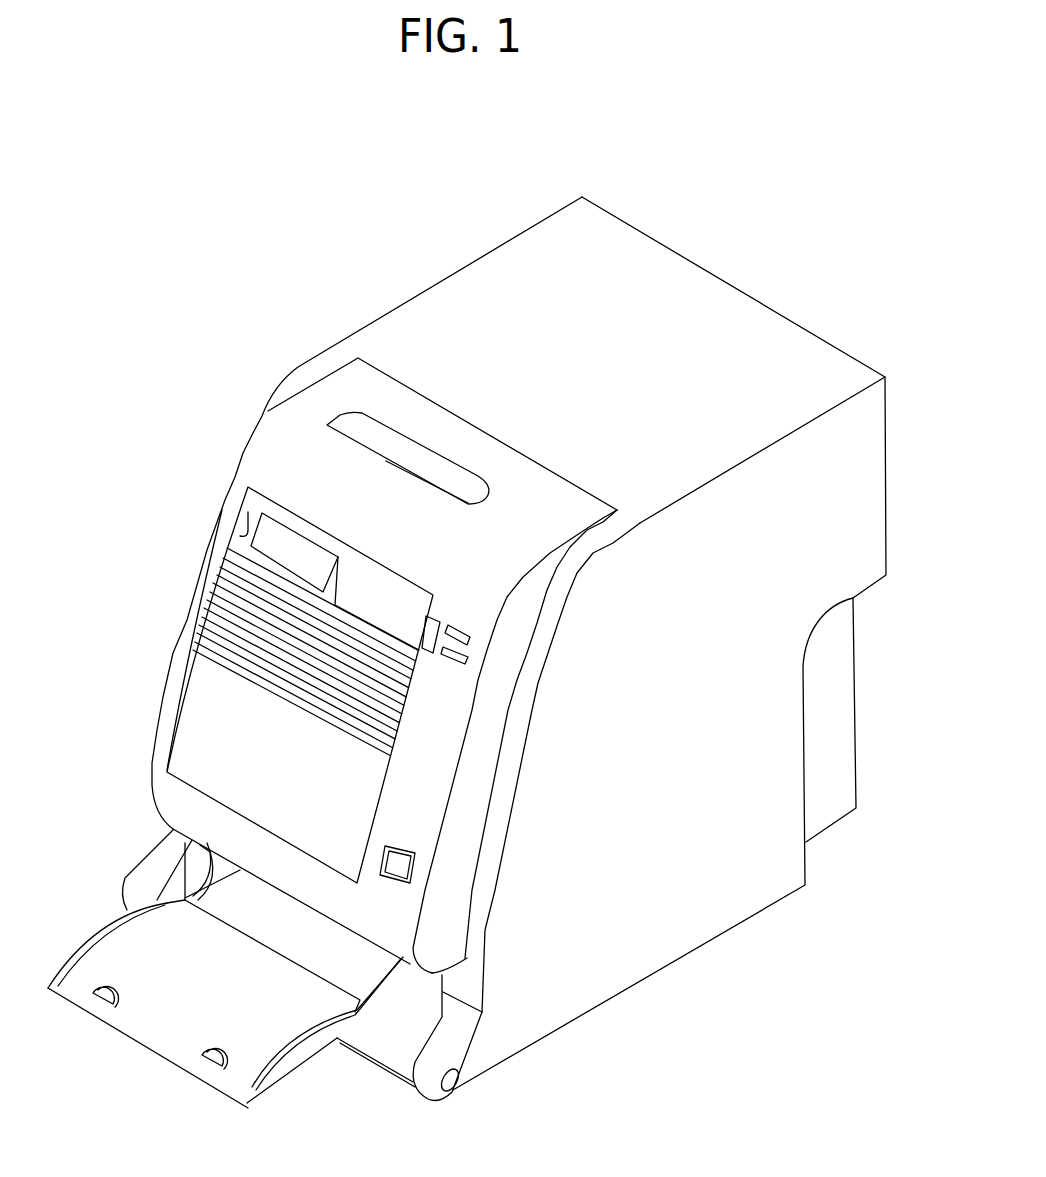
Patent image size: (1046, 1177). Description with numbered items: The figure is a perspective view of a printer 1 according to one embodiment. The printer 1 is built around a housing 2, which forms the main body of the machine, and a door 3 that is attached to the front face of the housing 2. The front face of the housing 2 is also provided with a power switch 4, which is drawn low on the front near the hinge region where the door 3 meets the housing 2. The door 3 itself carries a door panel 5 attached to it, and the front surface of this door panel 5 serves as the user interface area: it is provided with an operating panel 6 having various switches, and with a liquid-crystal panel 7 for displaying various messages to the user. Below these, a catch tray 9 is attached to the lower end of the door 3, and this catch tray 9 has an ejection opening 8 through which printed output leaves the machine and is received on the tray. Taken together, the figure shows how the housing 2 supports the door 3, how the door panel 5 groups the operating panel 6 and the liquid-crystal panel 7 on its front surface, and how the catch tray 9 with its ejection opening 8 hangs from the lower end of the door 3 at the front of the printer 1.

The printer 1 is at (138, 727).
The housing 2 is at (783, 317).
The door 3 is at (168, 670).
The power switch 4 is at (453, 978).
The door panel 5 is at (258, 457).
The operating panel 6 is at (400, 607).
The liquid-crystal panel 7 is at (273, 540).
The ejection opening 8 is at (350, 970).
The catch tray 9 is at (140, 1043).